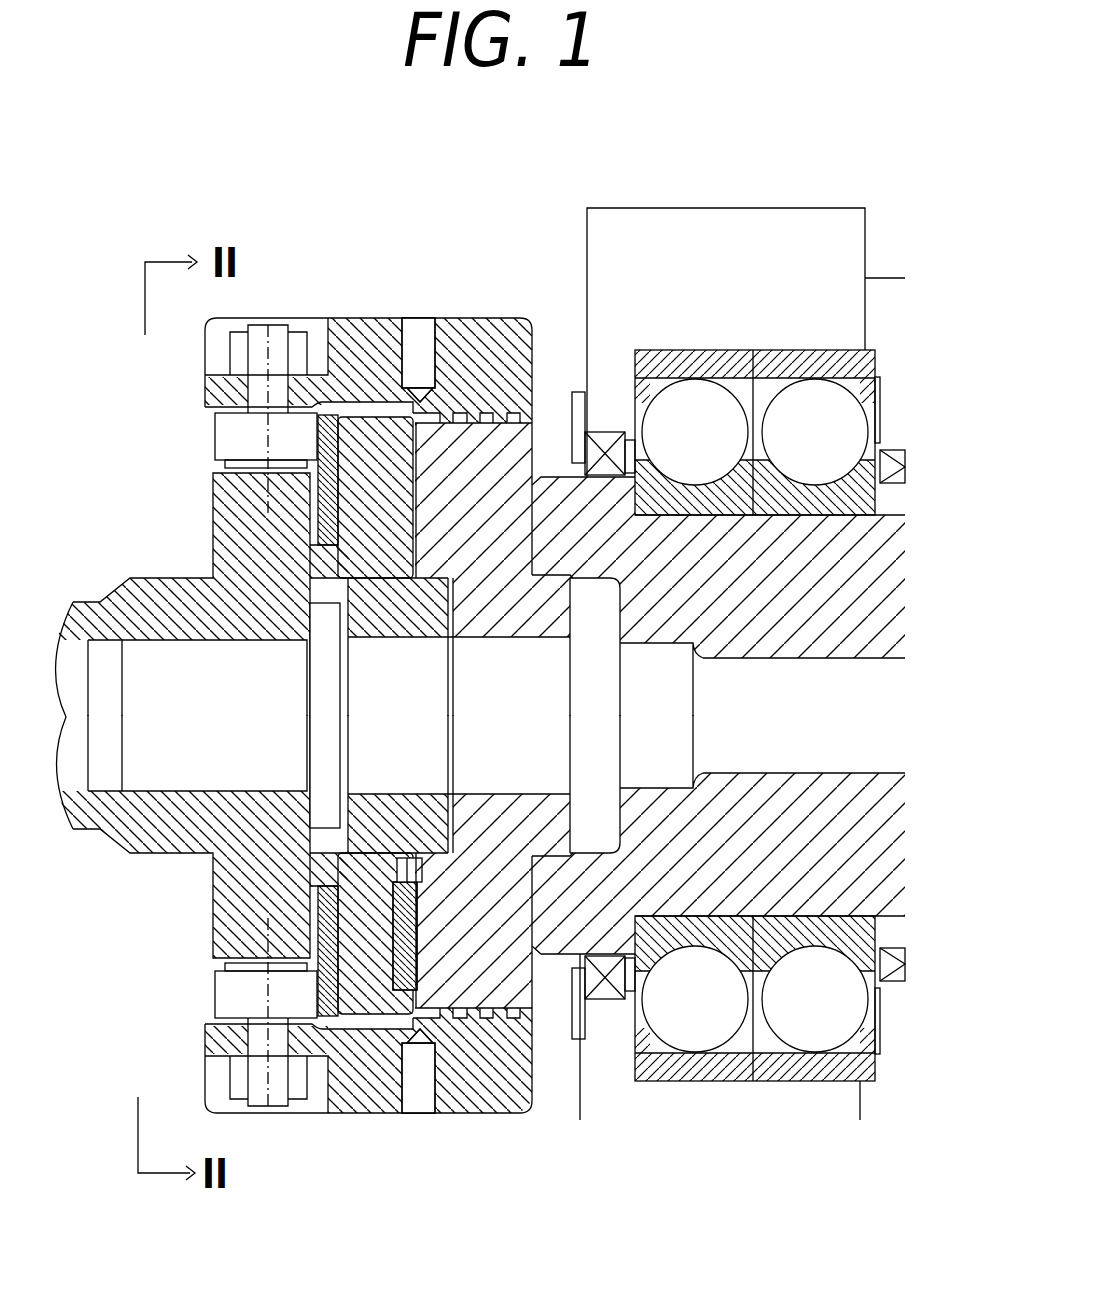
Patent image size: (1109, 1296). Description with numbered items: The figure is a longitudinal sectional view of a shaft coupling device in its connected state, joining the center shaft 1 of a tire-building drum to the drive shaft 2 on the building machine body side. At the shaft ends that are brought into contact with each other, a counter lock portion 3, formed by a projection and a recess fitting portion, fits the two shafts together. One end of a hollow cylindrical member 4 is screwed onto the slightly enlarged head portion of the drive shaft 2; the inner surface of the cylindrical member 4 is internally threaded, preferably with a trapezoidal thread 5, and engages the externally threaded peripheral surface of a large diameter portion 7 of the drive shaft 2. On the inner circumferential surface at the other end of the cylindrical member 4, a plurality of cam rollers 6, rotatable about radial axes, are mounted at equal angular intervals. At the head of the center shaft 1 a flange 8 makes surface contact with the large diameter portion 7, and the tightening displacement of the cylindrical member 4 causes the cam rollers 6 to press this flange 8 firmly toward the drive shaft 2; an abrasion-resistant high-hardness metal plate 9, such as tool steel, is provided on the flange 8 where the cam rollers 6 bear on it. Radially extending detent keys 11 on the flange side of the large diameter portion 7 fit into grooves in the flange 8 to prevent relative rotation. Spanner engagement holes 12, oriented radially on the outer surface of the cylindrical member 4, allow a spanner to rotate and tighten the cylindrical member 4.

The center shaft 1 is at (130, 578).
The drive shaft 2 is at (853, 530).
The counter lock portion 3 is at (518, 1110).
The hollow cylindrical member 4 is at (377, 340).
The trapezoidal thread 5 is at (460, 418).
The cam rollers 6 is at (227, 440).
The large diameter portion 7 is at (500, 975).
The flange 8 is at (355, 995).
The abrasion-resistant high-hardness metal plate 9 is at (327, 418).
The detent keys 11 is at (455, 1110).
The spanner engagement holes 12 is at (420, 343).